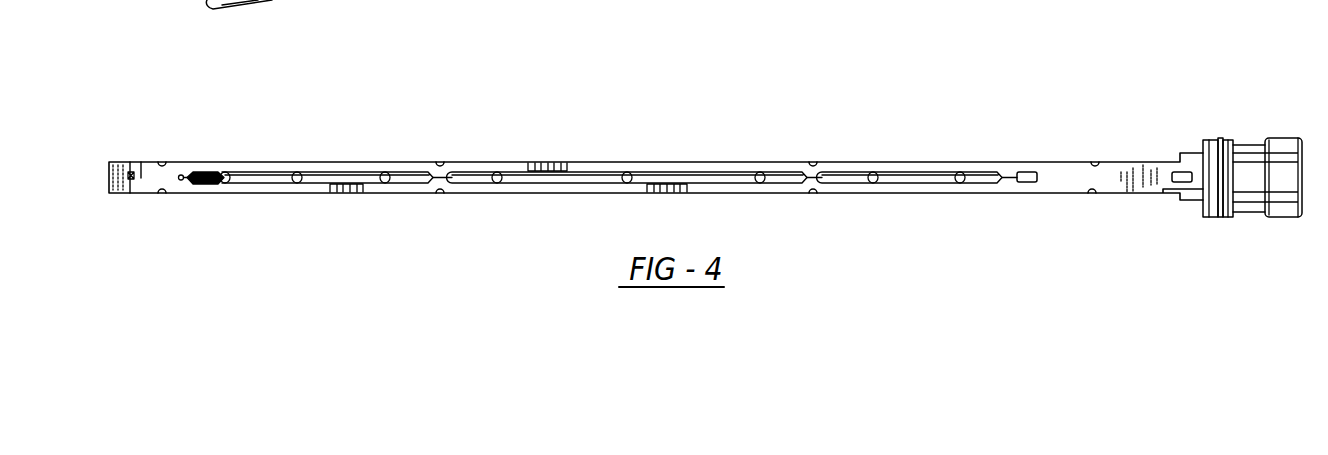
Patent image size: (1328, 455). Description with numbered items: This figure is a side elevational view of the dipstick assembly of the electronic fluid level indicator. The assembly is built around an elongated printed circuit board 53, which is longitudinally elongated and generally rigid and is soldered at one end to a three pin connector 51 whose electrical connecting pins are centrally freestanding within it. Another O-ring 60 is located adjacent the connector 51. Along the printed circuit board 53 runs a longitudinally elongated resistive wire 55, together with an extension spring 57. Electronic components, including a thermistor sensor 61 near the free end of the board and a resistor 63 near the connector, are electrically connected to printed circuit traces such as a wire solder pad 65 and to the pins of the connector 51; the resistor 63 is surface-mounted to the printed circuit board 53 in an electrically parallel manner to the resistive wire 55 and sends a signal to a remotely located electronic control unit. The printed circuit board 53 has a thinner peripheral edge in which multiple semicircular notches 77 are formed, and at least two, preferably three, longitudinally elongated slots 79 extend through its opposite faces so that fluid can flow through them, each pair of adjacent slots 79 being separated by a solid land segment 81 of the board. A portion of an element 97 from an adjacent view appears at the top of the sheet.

The three pin connector 51 is at (1283, 147).
The elongated printed circuit board 53 is at (365, 161).
The resistive wire 55 is at (443, 184).
The extension spring 57 is at (203, 174).
The O-ring 60 is at (1220, 139).
The thermistor sensor 61 is at (131, 181).
The resistor 63 is at (1182, 172).
The wire solder pad 65 is at (1030, 172).
The semicircular notches 77 is at (1087, 190).
The longitudinally elongated slots 79 is at (247, 172).
The solid land segment 81 is at (444, 171).
The adjacent figure element 97 is at (178, 0).